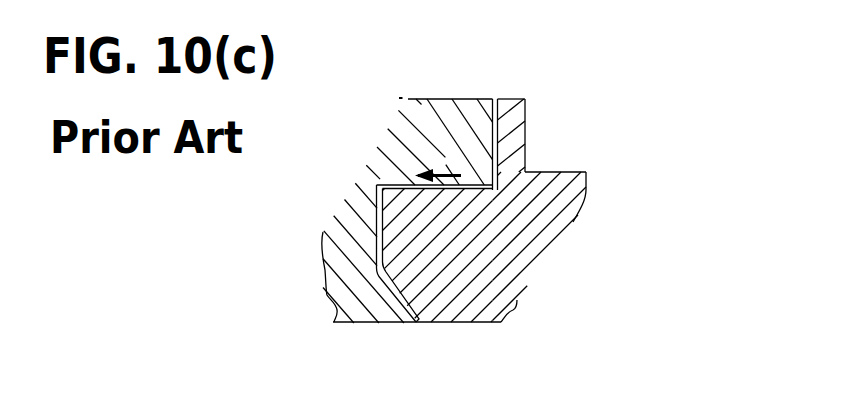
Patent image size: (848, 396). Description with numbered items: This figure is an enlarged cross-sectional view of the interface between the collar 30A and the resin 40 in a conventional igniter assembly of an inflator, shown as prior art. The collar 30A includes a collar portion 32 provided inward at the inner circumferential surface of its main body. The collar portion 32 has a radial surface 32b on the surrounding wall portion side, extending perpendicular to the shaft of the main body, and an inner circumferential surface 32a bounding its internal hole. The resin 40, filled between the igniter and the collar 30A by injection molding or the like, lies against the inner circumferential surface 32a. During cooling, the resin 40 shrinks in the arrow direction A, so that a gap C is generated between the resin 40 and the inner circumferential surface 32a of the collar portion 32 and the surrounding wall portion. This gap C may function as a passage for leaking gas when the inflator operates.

The collar 30A is at (593, 195).
The collar portion 32 is at (448, 277).
The inner circumferential surface 32a is at (400, 237).
The surface 32b is at (394, 183).
The resin 40 is at (362, 290).
The arrow direction A is at (447, 185).
The gap C is at (498, 100).